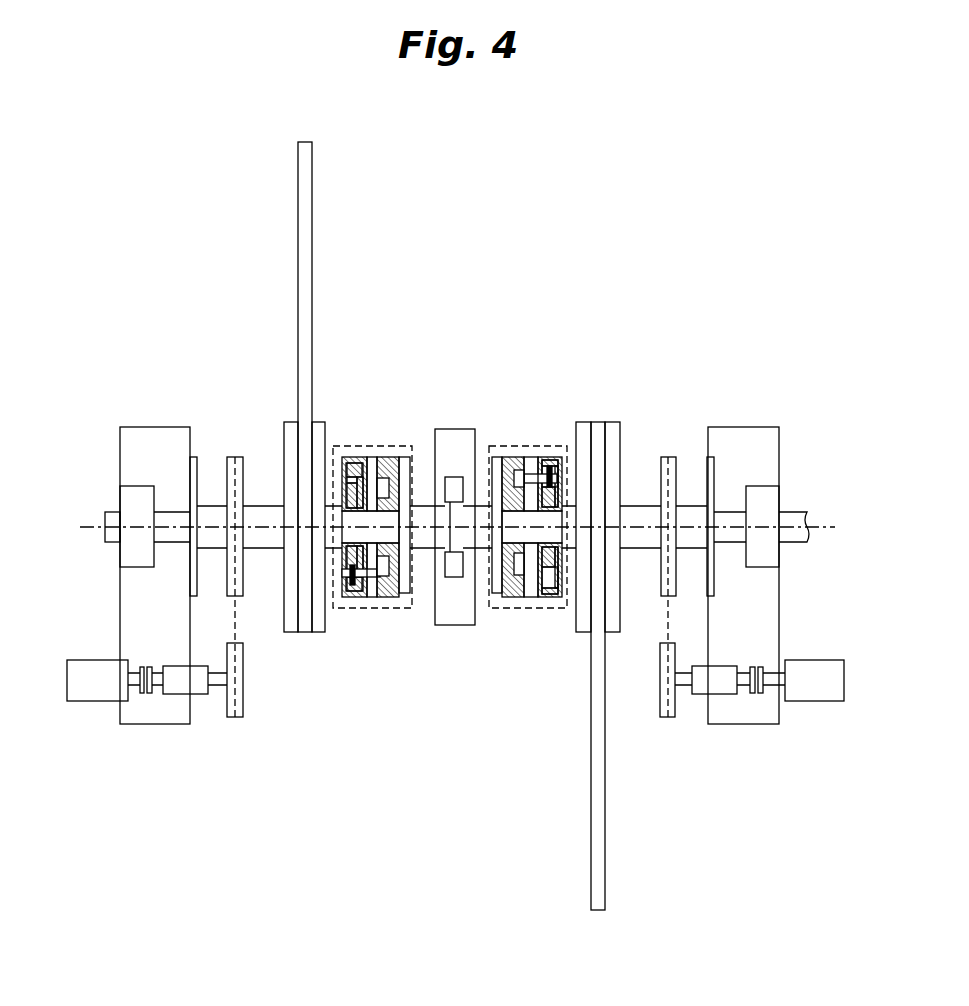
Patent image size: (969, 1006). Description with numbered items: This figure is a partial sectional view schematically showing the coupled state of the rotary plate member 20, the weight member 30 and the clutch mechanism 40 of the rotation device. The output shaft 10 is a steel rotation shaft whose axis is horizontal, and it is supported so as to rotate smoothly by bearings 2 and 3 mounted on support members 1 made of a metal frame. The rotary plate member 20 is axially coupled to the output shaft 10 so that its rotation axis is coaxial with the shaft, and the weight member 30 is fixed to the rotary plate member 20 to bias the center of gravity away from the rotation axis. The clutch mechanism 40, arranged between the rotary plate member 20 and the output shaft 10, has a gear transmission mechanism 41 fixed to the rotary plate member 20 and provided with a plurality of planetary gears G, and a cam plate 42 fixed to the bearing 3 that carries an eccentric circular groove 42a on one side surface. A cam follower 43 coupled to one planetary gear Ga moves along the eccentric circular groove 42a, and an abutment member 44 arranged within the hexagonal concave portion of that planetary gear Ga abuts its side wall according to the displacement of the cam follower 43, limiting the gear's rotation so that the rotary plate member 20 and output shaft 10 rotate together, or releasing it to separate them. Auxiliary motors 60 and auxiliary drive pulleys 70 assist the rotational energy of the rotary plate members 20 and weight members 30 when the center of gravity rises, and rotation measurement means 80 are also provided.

The support member 1 is at (136, 447).
The bearing 2 is at (127, 505).
The bearing 3 is at (427, 522).
The output shaft 10 is at (370, 515).
The rotary plate member 20 is at (583, 420).
The weight member 30 is at (312, 262).
The clutch mechanism 40 is at (452, 529).
The gear transmission mechanism 41 is at (356, 456).
The cam plate 42 is at (393, 457).
The eccentric circular groove 42a is at (381, 456).
The cam follower 43 is at (520, 456).
The abutment member 44 is at (547, 456).
The auxiliary motor 60 is at (85, 703).
The auxiliary drive pulley 70 is at (240, 455).
The rotation measurement means 80 is at (203, 472).
The planetary gear G is at (347, 456).
The planetary gear Ga is at (555, 456).